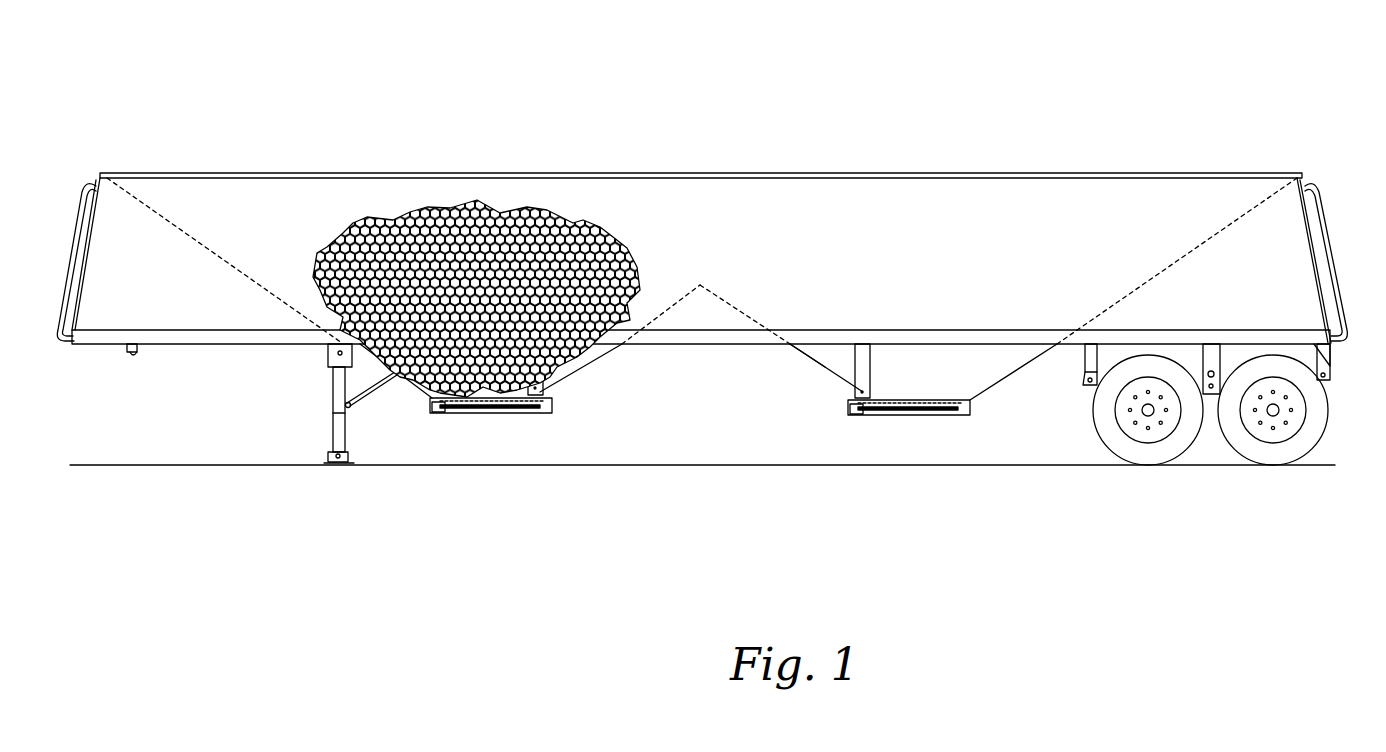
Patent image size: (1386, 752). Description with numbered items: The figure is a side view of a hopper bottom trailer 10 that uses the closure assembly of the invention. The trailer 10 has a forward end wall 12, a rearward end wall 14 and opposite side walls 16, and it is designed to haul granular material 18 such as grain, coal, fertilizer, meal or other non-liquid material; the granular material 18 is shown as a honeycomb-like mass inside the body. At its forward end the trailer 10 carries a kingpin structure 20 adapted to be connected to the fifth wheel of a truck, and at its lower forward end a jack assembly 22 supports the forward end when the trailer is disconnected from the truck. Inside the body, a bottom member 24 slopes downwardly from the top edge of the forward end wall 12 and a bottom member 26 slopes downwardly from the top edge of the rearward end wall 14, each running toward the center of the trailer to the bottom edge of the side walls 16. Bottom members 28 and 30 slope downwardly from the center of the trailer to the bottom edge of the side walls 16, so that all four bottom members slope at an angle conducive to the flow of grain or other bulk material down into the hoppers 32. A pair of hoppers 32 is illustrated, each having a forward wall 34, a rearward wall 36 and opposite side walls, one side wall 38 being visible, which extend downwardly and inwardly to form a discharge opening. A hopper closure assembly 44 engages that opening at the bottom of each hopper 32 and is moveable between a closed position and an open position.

The hopper bottom trailer 10 is at (812, 67).
The forward end wall 12 is at (92, 204).
The rearward end wall 14 is at (1310, 210).
The side walls 16 is at (849, 236).
The granular material 18 is at (577, 245).
The kingpin structure 20 is at (130, 350).
The jack assembly 22 is at (338, 427).
The bottom member 24 is at (193, 238).
The bottom member 26 is at (1207, 243).
The bottom member 28 is at (667, 303).
The bottom member 30 is at (712, 290).
The hopper 32 is at (573, 373).
The forward wall 34 is at (803, 360).
The rearward wall 36 is at (1010, 377).
The side wall 38 is at (899, 385).
The hopper closure assembly 44 is at (460, 417).